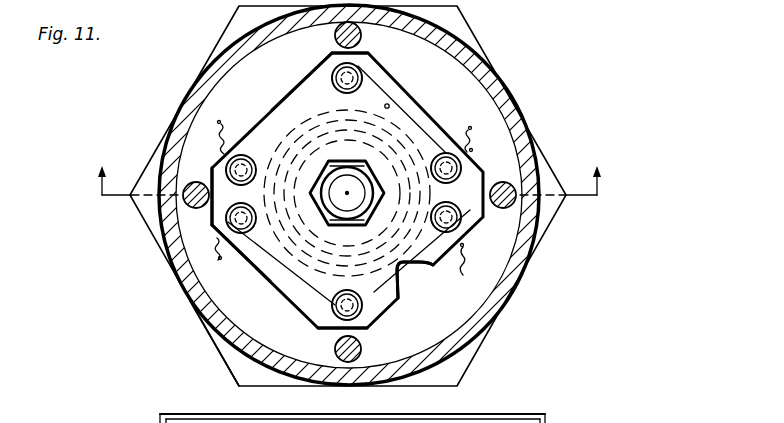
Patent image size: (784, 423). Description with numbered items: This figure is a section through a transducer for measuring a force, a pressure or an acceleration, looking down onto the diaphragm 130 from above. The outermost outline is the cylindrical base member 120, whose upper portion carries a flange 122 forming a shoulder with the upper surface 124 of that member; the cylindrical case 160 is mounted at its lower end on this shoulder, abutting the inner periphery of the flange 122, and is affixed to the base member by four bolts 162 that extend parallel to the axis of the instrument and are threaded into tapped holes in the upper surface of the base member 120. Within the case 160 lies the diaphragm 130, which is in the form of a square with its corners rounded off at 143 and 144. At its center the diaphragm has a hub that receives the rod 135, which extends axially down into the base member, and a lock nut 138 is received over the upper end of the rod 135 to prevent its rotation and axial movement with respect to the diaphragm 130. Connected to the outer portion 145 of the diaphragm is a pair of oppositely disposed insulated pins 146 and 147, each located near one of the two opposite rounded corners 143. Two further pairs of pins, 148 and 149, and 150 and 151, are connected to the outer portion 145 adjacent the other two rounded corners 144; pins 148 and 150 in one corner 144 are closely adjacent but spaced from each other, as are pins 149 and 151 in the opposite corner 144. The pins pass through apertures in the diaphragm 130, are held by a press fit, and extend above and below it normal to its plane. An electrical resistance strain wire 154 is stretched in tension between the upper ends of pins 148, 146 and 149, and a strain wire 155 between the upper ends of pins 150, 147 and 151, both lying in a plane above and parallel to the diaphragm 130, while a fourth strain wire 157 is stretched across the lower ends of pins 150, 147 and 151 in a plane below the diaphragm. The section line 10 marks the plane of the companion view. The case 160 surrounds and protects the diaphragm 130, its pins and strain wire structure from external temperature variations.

The section line 10- 10 is at (350, 172).
The cylindrical base member 120 is at (155, 244).
The flange 122 is at (218, 359).
The upper surface 124 is at (504, 279).
The diaphragm 130 is at (299, 86).
The rod 135 is at (344, 180).
The lock nut 138 is at (313, 163).
The rounded corners 143 is at (333, 52).
The rounded corners 144 is at (187, 143).
The outer portion 145 is at (246, 269).
The insulated pin 146 is at (362, 76).
The insulated pin 147 is at (338, 303).
The pin 148 is at (287, 96).
The pin 149 is at (445, 153).
The pin 150 is at (216, 203).
The pin 151 is at (449, 207).
The electrical resistance strain wire 154 is at (390, 105).
The strain wire 155 is at (288, 294).
The fourth strain wire 157 is at (413, 273).
The cylindrical case 160 is at (212, 67).
The bolts 162 is at (362, 30).